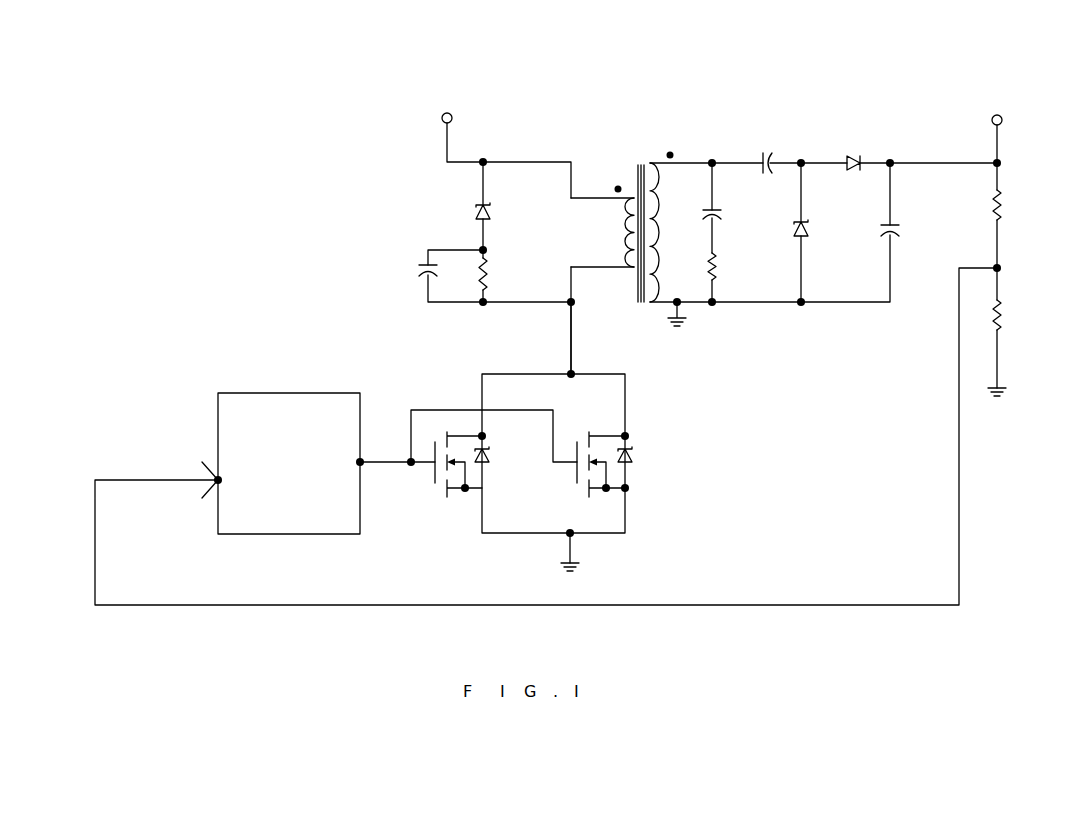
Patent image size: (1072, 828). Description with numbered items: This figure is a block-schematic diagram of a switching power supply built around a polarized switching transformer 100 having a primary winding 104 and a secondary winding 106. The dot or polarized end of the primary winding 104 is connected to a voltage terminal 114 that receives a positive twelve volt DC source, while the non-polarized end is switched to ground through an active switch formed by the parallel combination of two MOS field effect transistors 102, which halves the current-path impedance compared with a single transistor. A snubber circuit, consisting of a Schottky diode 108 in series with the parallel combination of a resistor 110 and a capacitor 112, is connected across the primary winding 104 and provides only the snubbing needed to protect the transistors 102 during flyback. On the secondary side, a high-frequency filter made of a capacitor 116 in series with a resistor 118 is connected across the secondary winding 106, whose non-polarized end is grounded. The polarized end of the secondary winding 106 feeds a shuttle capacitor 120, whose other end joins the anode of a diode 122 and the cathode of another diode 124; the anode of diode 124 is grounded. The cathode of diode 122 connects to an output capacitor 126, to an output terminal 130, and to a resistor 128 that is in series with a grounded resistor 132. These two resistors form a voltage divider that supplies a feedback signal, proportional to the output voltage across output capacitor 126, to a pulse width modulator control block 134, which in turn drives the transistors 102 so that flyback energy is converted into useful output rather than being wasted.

The switching transformer 100 is at (632, 163).
The MOS field effect transistors 102 is at (491, 456).
The primary winding 104 is at (626, 222).
The secondary winding 106 is at (656, 245).
The Schottky diode 108 is at (491, 208).
The resistor 110 is at (490, 266).
The capacitor 112 is at (423, 262).
The voltage terminal 114 is at (452, 120).
The capacitor 116 is at (722, 218).
The resistor 118 is at (722, 268).
The shuttle capacitor 120 is at (768, 152).
The diode 122 is at (855, 152).
The diode 124 is at (807, 232).
The output capacitor 126 is at (898, 223).
The resistor 128 is at (1003, 195).
The output terminal 130 is at (1003, 120).
The resistor 132 is at (1003, 316).
The pulse width modulator control block 134 is at (297, 393).